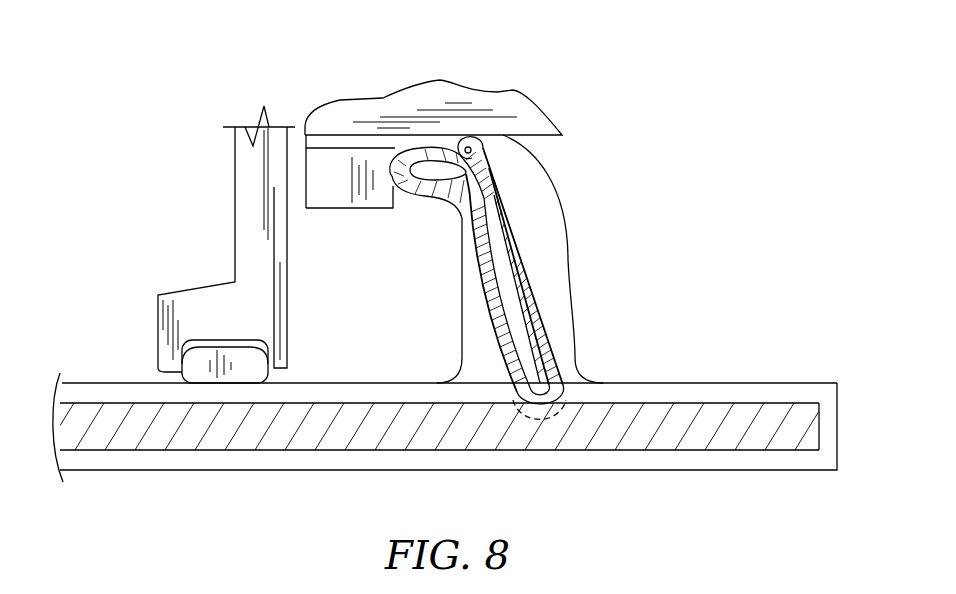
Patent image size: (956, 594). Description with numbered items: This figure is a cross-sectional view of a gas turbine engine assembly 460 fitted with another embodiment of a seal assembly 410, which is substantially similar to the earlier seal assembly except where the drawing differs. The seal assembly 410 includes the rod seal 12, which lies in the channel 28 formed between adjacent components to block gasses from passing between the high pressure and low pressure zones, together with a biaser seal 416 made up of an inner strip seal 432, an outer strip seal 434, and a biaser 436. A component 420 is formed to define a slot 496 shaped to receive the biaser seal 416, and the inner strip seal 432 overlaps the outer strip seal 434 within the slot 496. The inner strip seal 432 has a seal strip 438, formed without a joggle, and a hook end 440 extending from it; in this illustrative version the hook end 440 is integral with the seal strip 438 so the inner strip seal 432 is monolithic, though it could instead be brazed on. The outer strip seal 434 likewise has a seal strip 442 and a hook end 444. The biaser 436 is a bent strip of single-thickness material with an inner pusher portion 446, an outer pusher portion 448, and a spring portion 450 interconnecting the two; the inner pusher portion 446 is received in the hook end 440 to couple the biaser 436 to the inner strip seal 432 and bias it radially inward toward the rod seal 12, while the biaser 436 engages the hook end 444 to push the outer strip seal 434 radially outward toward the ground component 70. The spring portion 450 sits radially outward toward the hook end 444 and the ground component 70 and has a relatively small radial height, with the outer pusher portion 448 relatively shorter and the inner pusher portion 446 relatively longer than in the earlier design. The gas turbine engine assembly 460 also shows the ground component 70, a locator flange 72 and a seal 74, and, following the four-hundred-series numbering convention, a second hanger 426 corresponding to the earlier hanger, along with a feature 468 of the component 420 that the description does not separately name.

The rod seal 12 is at (83, 386).
The channel 28 is at (133, 382).
The ground component 70 is at (502, 100).
The locator flange 72 is at (234, 177).
The seal 74 is at (195, 341).
The seal assembly 410 is at (684, 156).
The biaser seal 416 is at (444, 229).
The component 420 is at (760, 381).
The block portion 426 is at (303, 183).
The inner strip seal 432 is at (563, 345).
The outer strip seal 434 is at (510, 183).
The biaser 436 is at (416, 200).
The seal strip 438 is at (554, 322).
The hook end 440 is at (569, 407).
The seal strip 442 is at (529, 252).
The hook end 444 is at (460, 133).
The inner pusher portion 446 is at (507, 316).
The outer pusher portion 448 is at (488, 191).
The spring portion 450 is at (392, 150).
The gas turbine engine assembly 460 is at (133, 85).
The end wall 468 is at (807, 393).
The slot 496 is at (511, 163).